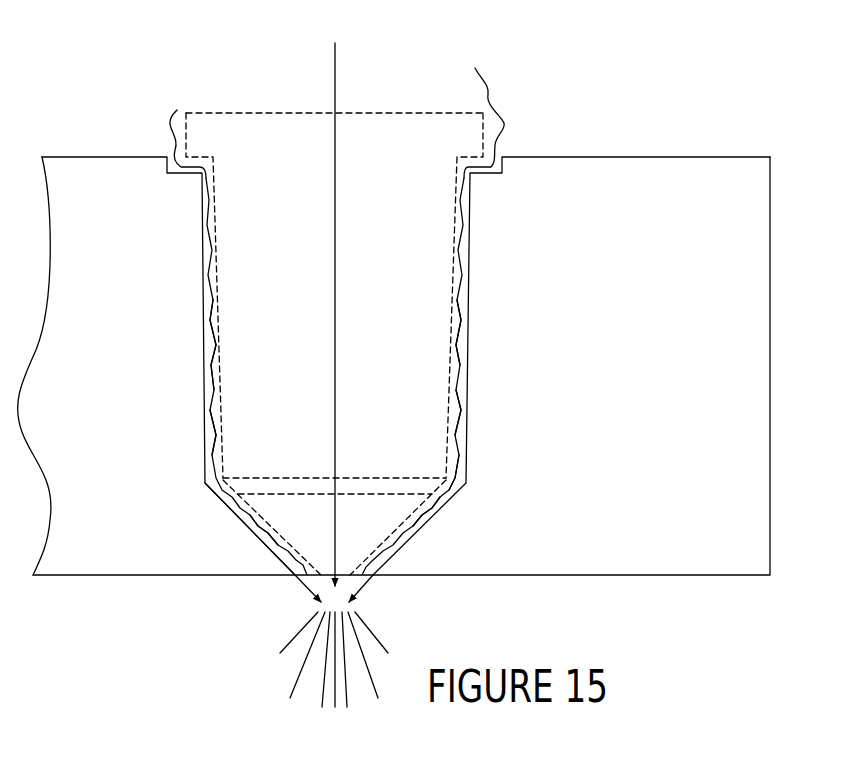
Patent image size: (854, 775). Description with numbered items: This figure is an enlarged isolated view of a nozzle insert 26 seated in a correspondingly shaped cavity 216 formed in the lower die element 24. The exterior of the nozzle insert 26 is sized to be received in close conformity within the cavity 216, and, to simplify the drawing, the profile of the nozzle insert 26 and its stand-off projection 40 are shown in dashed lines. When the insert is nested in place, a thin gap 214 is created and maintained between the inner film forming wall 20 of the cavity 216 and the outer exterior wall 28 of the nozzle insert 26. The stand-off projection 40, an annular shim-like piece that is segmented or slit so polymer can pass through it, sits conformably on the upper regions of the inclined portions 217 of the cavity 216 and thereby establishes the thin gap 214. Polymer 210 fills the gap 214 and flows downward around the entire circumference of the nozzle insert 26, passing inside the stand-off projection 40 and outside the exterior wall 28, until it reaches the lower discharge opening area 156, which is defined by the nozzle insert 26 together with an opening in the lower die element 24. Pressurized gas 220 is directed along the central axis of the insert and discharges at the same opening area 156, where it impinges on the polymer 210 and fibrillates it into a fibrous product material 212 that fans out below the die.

The inner film forming wall 20 is at (230, 515).
The lower die element 24 is at (647, 319).
The nozzle insert 26 is at (362, 113).
The outer exterior wall 28 is at (218, 360).
The stand-off projection 40 is at (355, 478).
The lower discharge opening area 156 is at (291, 589).
The polymer 210 is at (258, 71).
The fibrous product material 212 is at (380, 623).
The thin gap 214 is at (212, 410).
The cavity 216 is at (468, 393).
The inclined portions 217 is at (463, 485).
The pressurized gas 220 is at (348, 58).